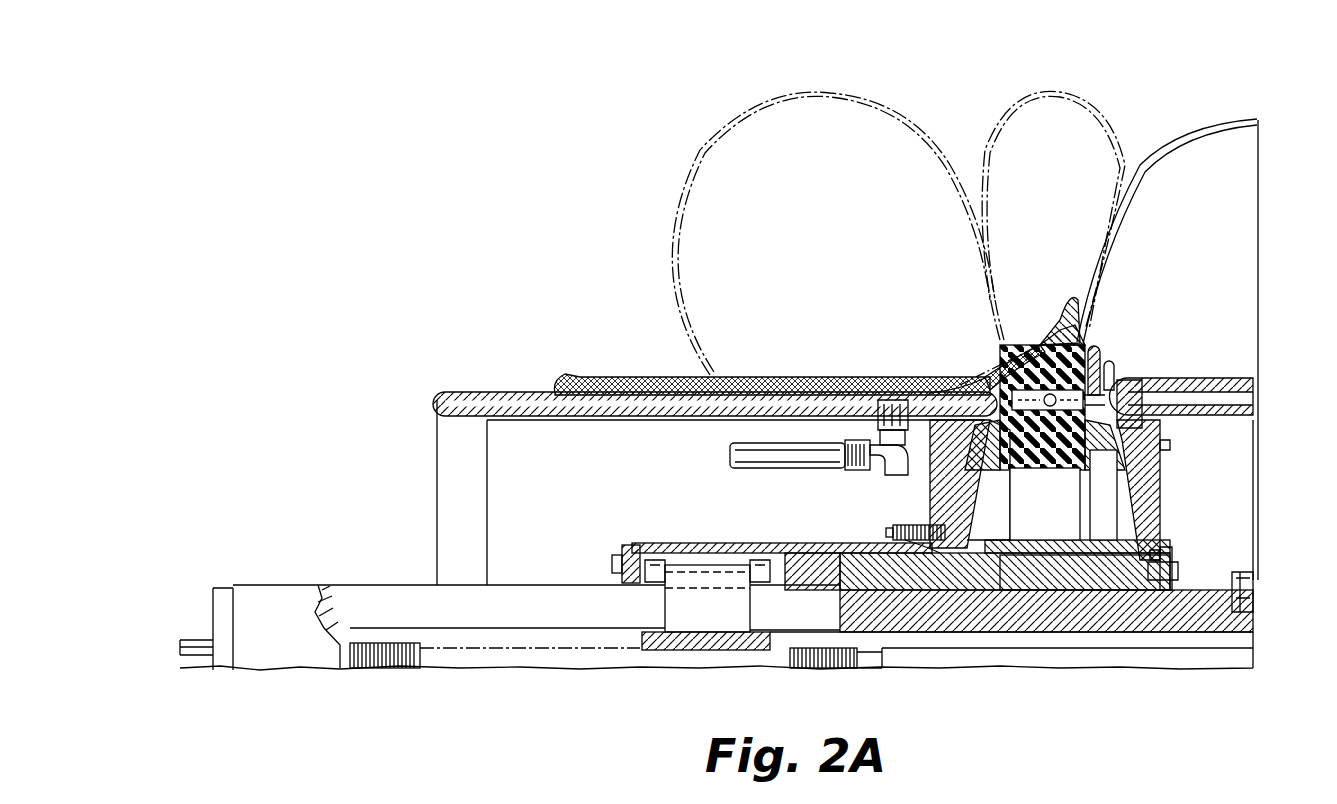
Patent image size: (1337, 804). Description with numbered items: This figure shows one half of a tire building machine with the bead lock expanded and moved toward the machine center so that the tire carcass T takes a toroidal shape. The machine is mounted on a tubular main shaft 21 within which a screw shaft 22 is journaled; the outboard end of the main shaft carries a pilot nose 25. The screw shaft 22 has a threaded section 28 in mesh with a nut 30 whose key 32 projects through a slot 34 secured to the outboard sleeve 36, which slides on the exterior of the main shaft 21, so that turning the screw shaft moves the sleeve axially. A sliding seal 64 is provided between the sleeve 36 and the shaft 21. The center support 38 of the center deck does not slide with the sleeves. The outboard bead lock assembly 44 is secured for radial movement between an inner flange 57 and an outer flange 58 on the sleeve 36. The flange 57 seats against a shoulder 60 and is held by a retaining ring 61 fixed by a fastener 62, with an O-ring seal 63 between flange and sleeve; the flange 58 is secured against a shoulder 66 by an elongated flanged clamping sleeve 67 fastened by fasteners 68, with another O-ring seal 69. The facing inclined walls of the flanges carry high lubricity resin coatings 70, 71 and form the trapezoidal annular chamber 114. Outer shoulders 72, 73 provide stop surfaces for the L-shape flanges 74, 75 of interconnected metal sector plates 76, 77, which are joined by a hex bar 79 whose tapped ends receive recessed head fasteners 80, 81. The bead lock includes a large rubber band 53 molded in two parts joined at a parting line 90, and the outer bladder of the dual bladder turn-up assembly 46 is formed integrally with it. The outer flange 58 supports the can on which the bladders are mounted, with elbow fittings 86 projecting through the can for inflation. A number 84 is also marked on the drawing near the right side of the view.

The main shaft 21 is at (990, 632).
The screw shaft 22 is at (628, 665).
The pilot nose 25 is at (198, 640).
The threaded section 28 is at (820, 664).
The nut 30 is at (710, 648).
The key 32 is at (665, 607).
The slot 34 is at (522, 600).
The outboard sleeve 36 is at (820, 553).
The center support 38 is at (1253, 482).
The outboard bead lock assembly 44 is at (1100, 340).
The outboard dual bladder turn-up assembly 46 is at (655, 362).
The rubber band 53 is at (1086, 338).
The inner flange 57 is at (1172, 445).
The outer flange 58 is at (928, 476).
The shoulder 60 is at (1140, 545).
The retaining ring 61 is at (1170, 545).
The fastener 62 is at (1180, 568).
The O-ring seal 63 is at (1160, 555).
The sliding seal 64 is at (1155, 590).
The shoulder 66 is at (968, 550).
The clamping sleeve 67 is at (746, 543).
The fasteners 68 is at (618, 558).
The O-ring seal 69 is at (935, 553).
The high lubricity resin coating 70 is at (1142, 510).
The high lubricity resin coating 71 is at (970, 520).
The outer shoulder 72 is at (1100, 470).
The outer shoulder 73 is at (988, 470).
The L-shape flange 74 is at (1085, 455).
The L-shape flange 75 is at (1042, 442).
The sector plate 76 is at (1102, 370).
The sector plate 77 is at (985, 375).
The hex bar 79 is at (1112, 370).
The recessed head fastener 80 is at (1118, 384).
The recessed head fastener 81 is at (960, 380).
The housing 84 is at (1233, 262).
The elbow fitting 86 is at (872, 485).
The parting line 90 is at (1010, 365).
The annular chamber 114 is at (1040, 540).
The tire carcass T is at (1100, 240).